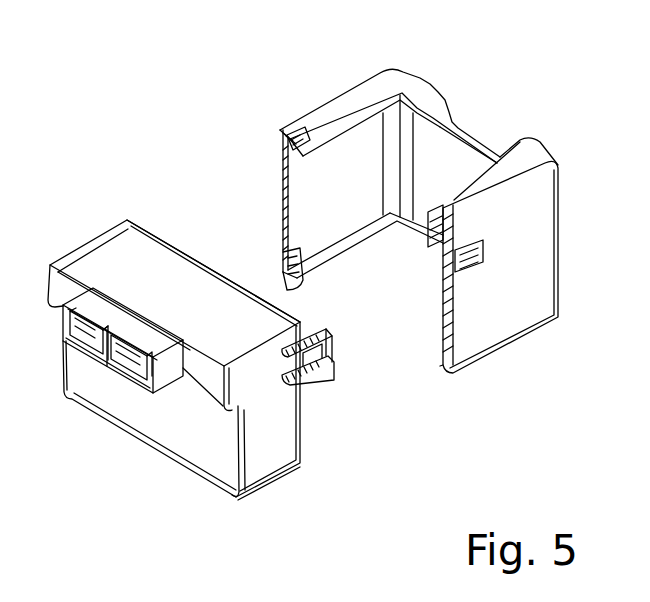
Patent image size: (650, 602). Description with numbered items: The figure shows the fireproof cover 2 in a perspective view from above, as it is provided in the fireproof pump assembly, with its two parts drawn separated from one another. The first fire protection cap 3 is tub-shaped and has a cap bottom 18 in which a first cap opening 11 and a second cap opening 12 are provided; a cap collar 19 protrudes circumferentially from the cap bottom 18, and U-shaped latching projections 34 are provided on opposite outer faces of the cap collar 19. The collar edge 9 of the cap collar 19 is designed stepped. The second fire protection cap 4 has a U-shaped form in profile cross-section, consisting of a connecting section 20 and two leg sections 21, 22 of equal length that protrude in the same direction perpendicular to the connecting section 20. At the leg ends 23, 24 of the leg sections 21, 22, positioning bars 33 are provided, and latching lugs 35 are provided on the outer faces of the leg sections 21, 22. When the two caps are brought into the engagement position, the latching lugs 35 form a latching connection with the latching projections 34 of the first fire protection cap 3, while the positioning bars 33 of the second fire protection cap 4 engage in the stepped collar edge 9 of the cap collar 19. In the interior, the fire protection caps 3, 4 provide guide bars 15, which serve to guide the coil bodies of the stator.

The fireproof cover 2 is at (118, 56).
The first fire protection cap 3 is at (83, 203).
The second fire protection cap 4 is at (327, 76).
The collar edge 9 is at (171, 246).
The first cap opening 11 is at (85, 333).
The second cap opening 12 is at (133, 357).
The guide bars 15 is at (352, 250).
The cap bottom 18 is at (201, 436).
The cap collar 19 is at (273, 478).
The connecting section 20 is at (458, 178).
The leg section 21 is at (346, 203).
The leg section 22 is at (523, 315).
The leg end 23 is at (270, 203).
The leg end 24 is at (426, 342).
The positioning bars 33 is at (292, 143).
The latching projections 34 is at (330, 373).
The latching lugs 35 is at (456, 258).